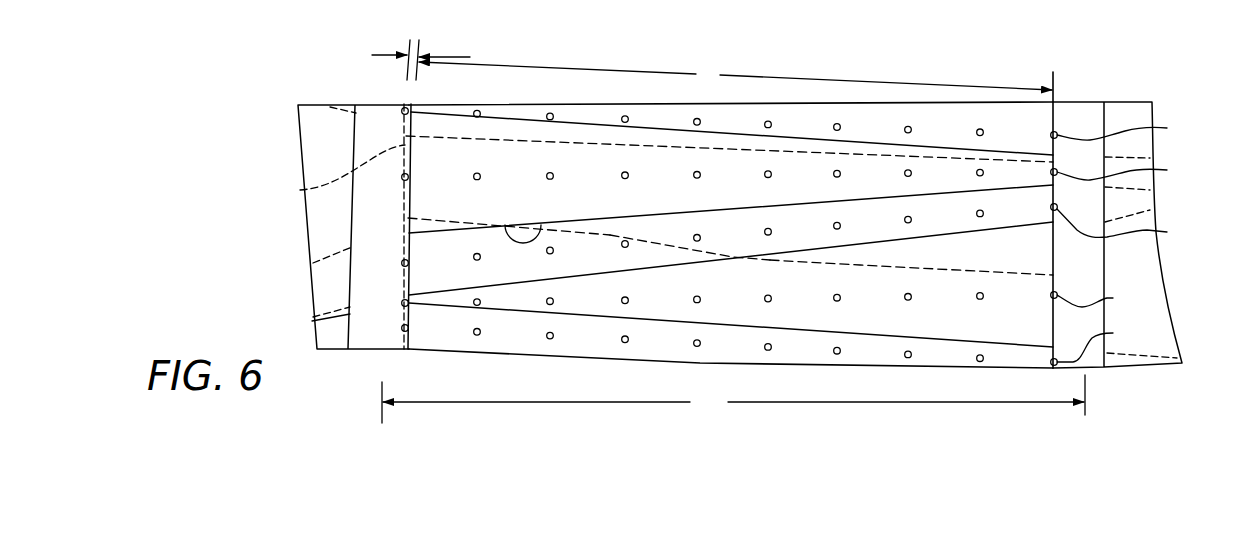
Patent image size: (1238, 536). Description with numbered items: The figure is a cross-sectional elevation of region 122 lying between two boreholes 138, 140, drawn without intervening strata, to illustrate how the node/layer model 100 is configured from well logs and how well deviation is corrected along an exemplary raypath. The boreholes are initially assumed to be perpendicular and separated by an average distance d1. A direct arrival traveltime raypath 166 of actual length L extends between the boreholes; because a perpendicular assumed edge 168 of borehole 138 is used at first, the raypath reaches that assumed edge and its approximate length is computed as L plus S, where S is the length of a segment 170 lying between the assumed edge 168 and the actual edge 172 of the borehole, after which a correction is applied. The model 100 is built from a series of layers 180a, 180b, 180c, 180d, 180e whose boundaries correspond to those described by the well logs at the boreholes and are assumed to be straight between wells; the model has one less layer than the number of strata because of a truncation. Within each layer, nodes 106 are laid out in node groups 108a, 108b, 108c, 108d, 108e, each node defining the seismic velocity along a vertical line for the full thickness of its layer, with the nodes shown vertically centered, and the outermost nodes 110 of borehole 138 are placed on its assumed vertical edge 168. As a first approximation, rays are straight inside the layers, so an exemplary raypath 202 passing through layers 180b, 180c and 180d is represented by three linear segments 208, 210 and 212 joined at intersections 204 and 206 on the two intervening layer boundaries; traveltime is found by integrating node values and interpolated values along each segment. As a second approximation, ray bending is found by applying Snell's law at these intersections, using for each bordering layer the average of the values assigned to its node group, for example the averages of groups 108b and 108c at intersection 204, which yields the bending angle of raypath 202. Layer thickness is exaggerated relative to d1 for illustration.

The node/layer model 100 is at (593, 117).
The nodes 106 is at (554, 335).
The node group 108a is at (836, 122).
The node group 108b is at (839, 172).
The node group 108c is at (838, 222).
The node group 108d is at (775, 295).
The node group 108e is at (781, 342).
The outermost nodes 110 is at (410, 328).
The region 122 is at (683, 204).
The borehole 138 is at (378, 105).
The borehole 140 is at (1077, 118).
The direct arrival traveltime raypath 166 is at (600, 143).
The assumed edge 168 is at (312, 189).
The segment 170 is at (412, 127).
The actual edge 172 is at (410, 155).
The layer 180a is at (993, 129).
The layer 180b is at (922, 184).
The layer 180c is at (923, 225).
The layer 180d is at (996, 258).
The layer 180e is at (1030, 352).
The raypath 202 is at (988, 268).
The intersection 204 is at (523, 224).
The intersection 206 is at (742, 260).
The segment 208 is at (444, 222).
The segment 210 is at (648, 243).
The segment 212 is at (865, 266).
The length S is at (421, 47).
The actual length L is at (735, 76).
The average distance d1 is at (733, 399).